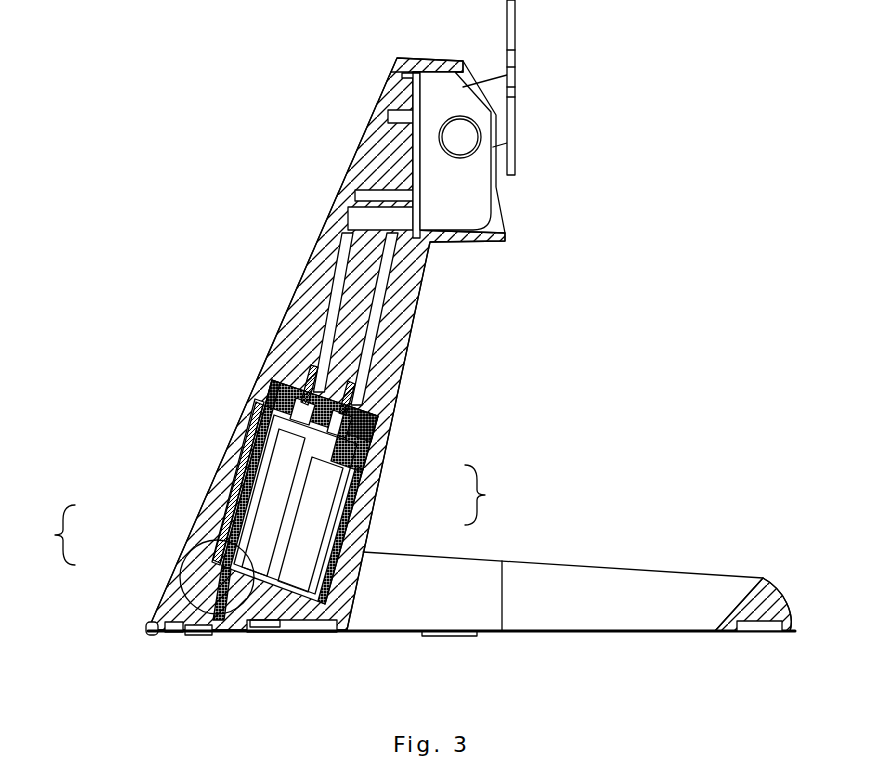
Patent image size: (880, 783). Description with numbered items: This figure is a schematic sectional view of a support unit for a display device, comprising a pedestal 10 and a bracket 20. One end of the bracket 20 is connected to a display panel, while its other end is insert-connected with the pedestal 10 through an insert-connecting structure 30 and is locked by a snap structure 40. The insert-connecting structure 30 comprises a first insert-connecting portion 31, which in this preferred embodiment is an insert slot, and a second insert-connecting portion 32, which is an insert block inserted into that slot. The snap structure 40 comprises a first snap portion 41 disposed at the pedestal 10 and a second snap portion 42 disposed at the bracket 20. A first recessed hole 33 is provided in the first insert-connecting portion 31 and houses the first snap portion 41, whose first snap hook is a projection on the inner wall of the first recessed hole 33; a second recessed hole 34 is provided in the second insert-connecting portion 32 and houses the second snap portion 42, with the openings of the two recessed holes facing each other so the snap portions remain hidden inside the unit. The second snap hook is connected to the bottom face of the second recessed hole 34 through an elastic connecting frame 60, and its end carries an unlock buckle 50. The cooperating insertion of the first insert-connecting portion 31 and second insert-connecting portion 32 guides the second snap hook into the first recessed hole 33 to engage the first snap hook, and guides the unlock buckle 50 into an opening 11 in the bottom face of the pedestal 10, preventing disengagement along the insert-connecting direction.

The pedestal 10 is at (557, 585).
The opening 11 is at (255, 633).
The bracket 20 is at (327, 263).
The insert-connecting structure 30 is at (342, 457).
The first insert-connecting portion 31 is at (365, 528).
The second insert-connecting portion 32 is at (383, 470).
The first recessed hole 33 is at (248, 493).
The second recessed hole 34 is at (277, 398).
The snap structure 40 is at (126, 565).
The first snap portion 41 is at (223, 567).
The second snap portion 42 is at (215, 573).
The unlock buckle 50 is at (217, 633).
The elastic connecting frame 60 is at (400, 400).